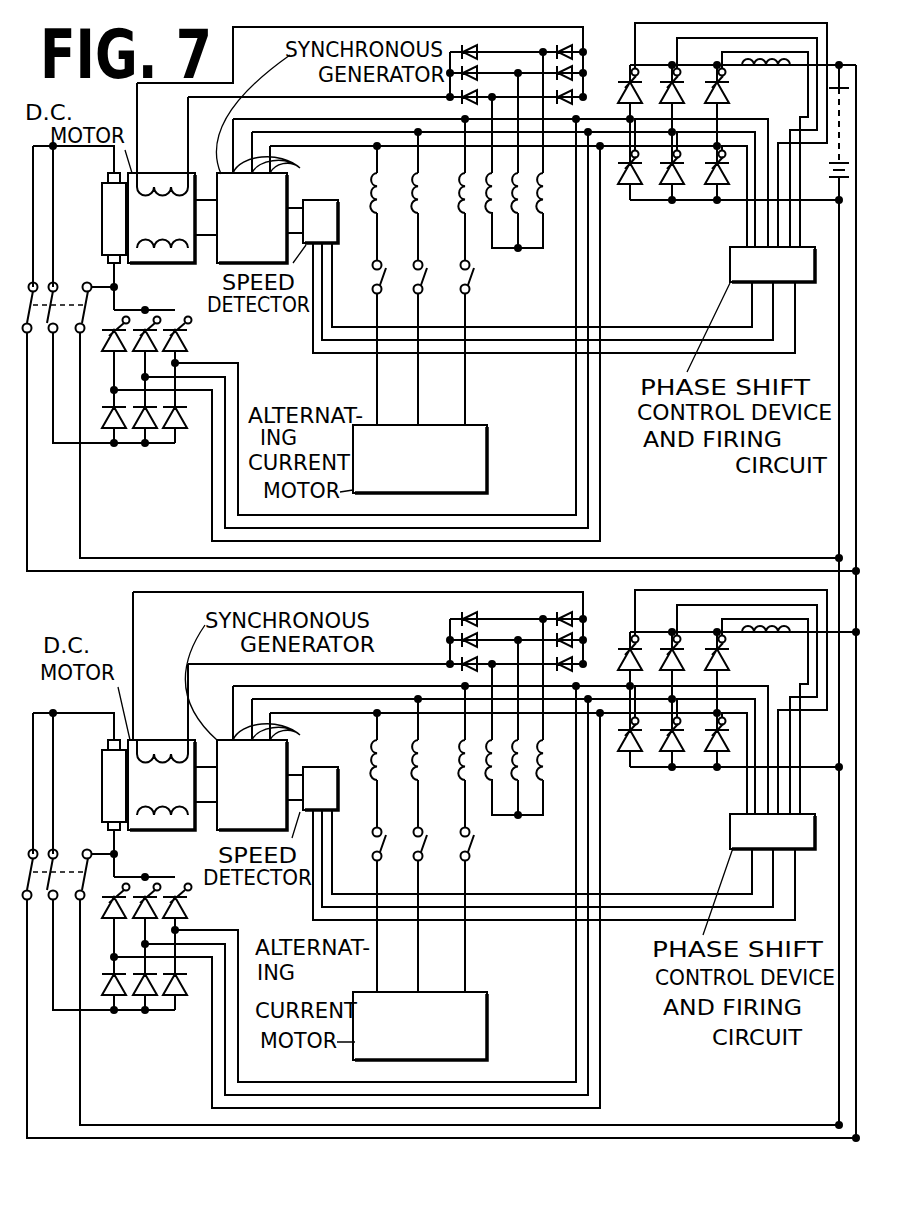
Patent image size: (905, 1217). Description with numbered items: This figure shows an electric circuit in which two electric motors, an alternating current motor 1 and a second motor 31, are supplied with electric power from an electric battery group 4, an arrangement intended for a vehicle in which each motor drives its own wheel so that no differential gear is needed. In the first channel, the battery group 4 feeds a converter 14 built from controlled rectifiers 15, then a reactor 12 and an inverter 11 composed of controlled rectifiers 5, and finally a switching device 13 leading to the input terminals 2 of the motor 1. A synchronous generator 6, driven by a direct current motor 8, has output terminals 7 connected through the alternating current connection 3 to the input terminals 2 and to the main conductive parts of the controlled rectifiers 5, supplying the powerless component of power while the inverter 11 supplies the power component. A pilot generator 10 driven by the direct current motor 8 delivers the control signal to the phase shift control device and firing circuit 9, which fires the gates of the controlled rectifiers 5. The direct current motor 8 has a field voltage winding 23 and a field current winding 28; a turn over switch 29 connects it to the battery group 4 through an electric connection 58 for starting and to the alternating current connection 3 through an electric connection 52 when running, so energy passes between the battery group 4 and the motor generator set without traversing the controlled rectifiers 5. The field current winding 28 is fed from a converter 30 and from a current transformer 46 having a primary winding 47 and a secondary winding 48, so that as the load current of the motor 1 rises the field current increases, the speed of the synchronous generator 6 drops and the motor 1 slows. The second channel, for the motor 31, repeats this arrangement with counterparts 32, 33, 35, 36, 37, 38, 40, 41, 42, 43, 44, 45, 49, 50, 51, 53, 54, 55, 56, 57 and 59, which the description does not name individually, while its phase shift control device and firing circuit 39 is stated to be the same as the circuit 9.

The alternating current motor 1 is at (420, 459).
The input terminals 2 is at (465, 425).
The alternating current connection 3 is at (367, 146).
The electric battery group 4 is at (843, 64).
The controlled rectifiers 5 is at (626, 85).
The synchronous generator 6 is at (252, 218).
The output terminals 7 is at (272, 177).
The direct current motor 8 is at (164, 220).
The phase shift control device and firing circuit 9 is at (772, 264).
The pilot generator 10 is at (320, 221).
The inverter 11 is at (730, 145).
The reactor 12 is at (781, 70).
The switching device 13 is at (470, 280).
The converter 14 is at (142, 398).
The controlled rectifiers 15 is at (188, 331).
The field voltage winding 23 is at (167, 252).
The field current winding 28 is at (163, 190).
The turn over switch 29 is at (72, 295).
The converter 30 is at (536, 60).
The electric motor 31 is at (420, 1026).
The motor stator leads 32 is at (463, 988).
The synchronous generator output leads 33 is at (300, 712).
The thyristor 35 is at (632, 638).
The speed detector 36 is at (252, 785).
The speed detector input leads 37 is at (283, 739).
The DC motor field unit 38 is at (163, 788).
The phase shift control device and firing circuit 39 is at (772, 831).
The speed detector output stage 40 is at (320, 788).
The thyristor bridge 41 is at (731, 700).
The reactor 42 is at (758, 637).
The switch 43 is at (470, 848).
The rectifier bridge 44 is at (142, 963).
The thyristors of rectifier bridge 45 is at (188, 900).
The current transformer 46 is at (376, 185).
The primary winding 47 is at (460, 192).
The secondary winding 48 is at (545, 212).
The generator winding 49 is at (376, 752).
The generator winding 50 is at (416, 768).
The generator winding 51 is at (545, 782).
The electric connection 52 is at (600, 492).
The connecting leads 53 is at (603, 1080).
The diode rectifier 54 is at (498, 641).
The switch 55 is at (70, 858).
The field winding 56 is at (163, 820).
The armature winding 57 is at (164, 758).
The electric connection 58 is at (687, 570).
The DC supply lines 59 is at (683, 1140).